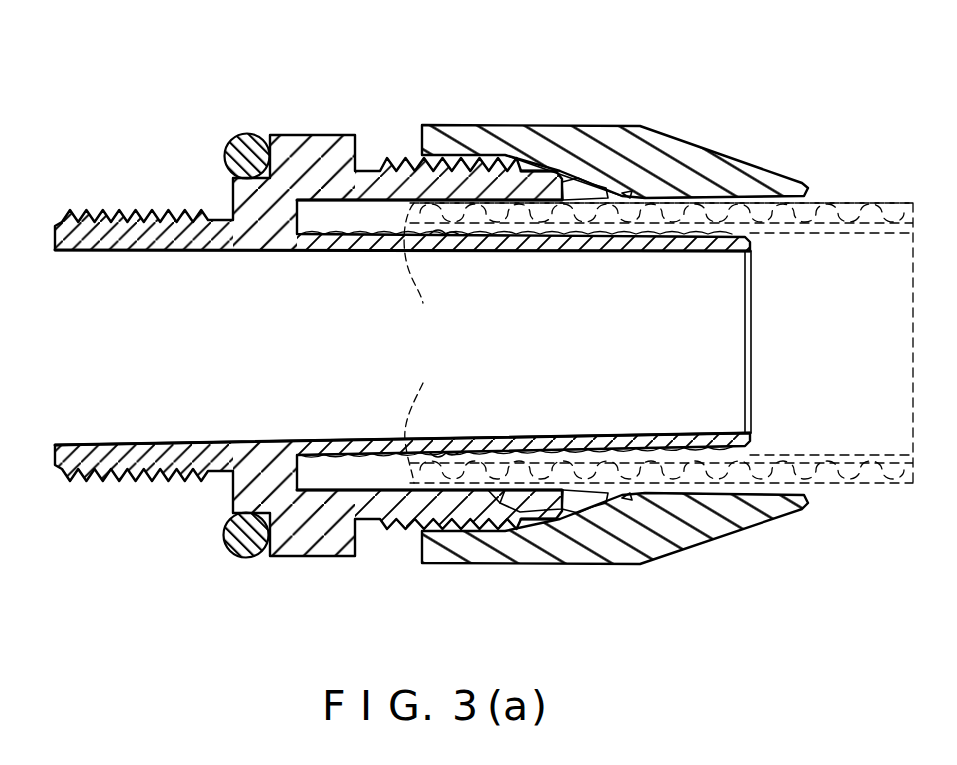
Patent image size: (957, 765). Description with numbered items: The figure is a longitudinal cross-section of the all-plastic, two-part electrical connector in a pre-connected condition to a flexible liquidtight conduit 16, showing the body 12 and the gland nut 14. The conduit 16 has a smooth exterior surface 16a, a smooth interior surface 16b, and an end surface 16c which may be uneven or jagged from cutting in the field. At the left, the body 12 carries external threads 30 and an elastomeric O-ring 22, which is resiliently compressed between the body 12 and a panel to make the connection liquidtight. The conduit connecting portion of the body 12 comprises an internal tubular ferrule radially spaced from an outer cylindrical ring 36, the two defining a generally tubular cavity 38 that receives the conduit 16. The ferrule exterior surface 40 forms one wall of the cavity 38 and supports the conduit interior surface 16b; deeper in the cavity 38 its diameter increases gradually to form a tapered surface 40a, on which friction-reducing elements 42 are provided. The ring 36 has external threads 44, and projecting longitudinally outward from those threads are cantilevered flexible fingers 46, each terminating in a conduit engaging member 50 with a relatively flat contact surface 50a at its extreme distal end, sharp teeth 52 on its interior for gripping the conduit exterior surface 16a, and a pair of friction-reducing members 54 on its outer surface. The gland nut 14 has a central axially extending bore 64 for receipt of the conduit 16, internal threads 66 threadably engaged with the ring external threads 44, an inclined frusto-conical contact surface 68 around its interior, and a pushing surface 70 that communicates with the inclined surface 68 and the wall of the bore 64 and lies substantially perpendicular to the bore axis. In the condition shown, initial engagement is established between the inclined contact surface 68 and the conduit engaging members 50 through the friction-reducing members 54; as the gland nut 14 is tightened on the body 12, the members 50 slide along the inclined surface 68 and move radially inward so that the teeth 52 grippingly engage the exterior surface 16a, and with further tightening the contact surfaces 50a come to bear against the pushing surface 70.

The body 12 is at (204, 150).
The gland nut 14 is at (652, 100).
The flexible conduit 16 is at (847, 204).
The exterior surface 16a is at (821, 202).
The interior surface 16b is at (875, 233).
The end surface 16c is at (411, 312).
The O-ring 22 is at (246, 559).
The external thread 30 is at (140, 483).
The outer cylindrical ring 36 is at (398, 500).
The tubular cavity 38 is at (353, 486).
The ferrule exterior surface 40 is at (603, 236).
The tapered surface 40a is at (443, 234).
The friction-reducing elements 42 is at (438, 452).
The external threads 44 is at (402, 157).
The flexible fingers 46 is at (522, 497).
The conduit engaging member 50 is at (602, 498).
The contact surface 50a is at (593, 205).
The teeth 52 is at (560, 490).
The friction-reducing members 54 is at (573, 507).
The central bore 64 is at (757, 199).
The internal threads 66 is at (487, 513).
The inclined contact surface 68 is at (606, 190).
The pushing surface 70 is at (656, 196).